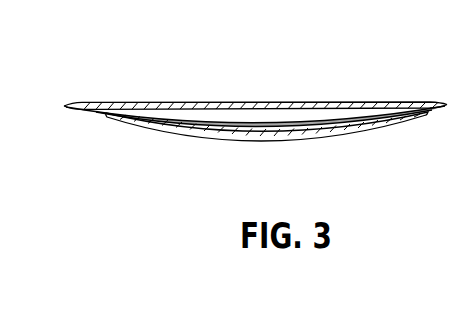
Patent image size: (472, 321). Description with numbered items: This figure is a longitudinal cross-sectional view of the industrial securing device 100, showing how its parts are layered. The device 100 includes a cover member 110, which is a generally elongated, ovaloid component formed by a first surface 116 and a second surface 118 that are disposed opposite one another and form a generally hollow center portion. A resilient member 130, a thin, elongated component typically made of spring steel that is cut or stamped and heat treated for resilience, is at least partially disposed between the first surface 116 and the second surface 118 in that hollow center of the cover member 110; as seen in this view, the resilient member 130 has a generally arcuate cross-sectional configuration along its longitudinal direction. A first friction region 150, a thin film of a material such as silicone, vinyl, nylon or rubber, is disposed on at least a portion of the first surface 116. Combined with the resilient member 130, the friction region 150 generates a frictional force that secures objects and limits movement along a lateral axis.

The industrial securing device 100 is at (193, 167).
The cover member 110 is at (166, 102).
The first surface 116 is at (84, 110).
The second surface 118 is at (307, 102).
The resilient member 130 is at (360, 112).
The first friction region 150 is at (347, 136).